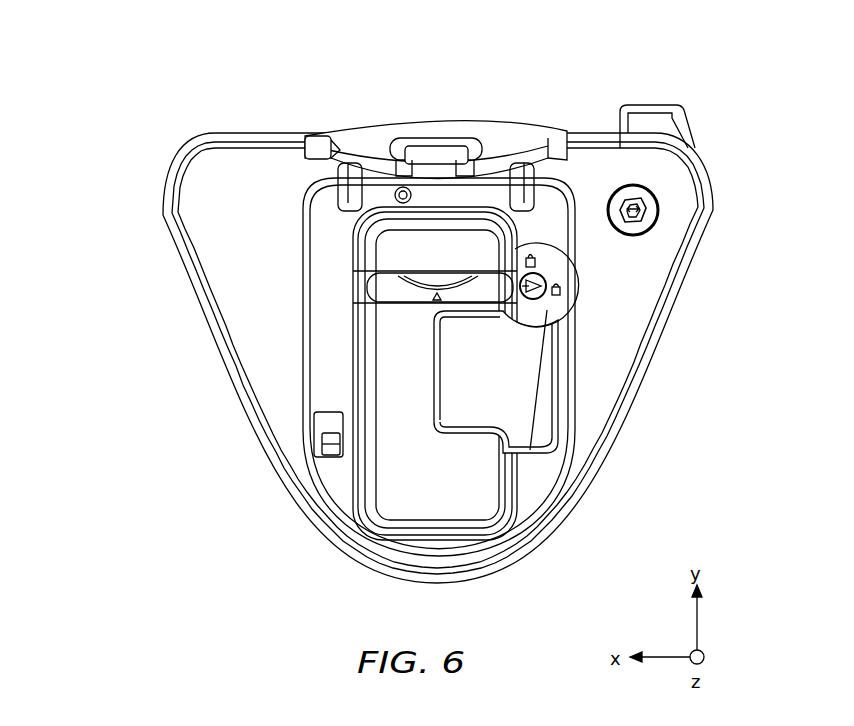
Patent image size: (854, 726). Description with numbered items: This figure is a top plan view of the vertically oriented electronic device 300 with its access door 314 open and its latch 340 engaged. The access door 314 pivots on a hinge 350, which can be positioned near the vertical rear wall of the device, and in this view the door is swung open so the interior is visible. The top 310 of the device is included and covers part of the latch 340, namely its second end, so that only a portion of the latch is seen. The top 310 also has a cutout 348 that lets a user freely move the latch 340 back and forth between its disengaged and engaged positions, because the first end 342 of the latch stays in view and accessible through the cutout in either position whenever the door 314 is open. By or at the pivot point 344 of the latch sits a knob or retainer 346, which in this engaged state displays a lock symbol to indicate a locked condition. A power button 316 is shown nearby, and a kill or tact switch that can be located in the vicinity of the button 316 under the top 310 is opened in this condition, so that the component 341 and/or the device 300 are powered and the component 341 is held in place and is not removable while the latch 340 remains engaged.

The vertically oriented electronic device 300 is at (449, 82).
The top 310 is at (196, 218).
The access door 314 is at (384, 128).
The power button 316 is at (634, 185).
The latch 340 is at (370, 306).
The component 341 is at (401, 500).
The first end 342 is at (362, 282).
The pivot point 344 is at (560, 292).
The knob or retainer 346 is at (548, 248).
The cutout 348 is at (574, 413).
The hinge 350 is at (334, 160).